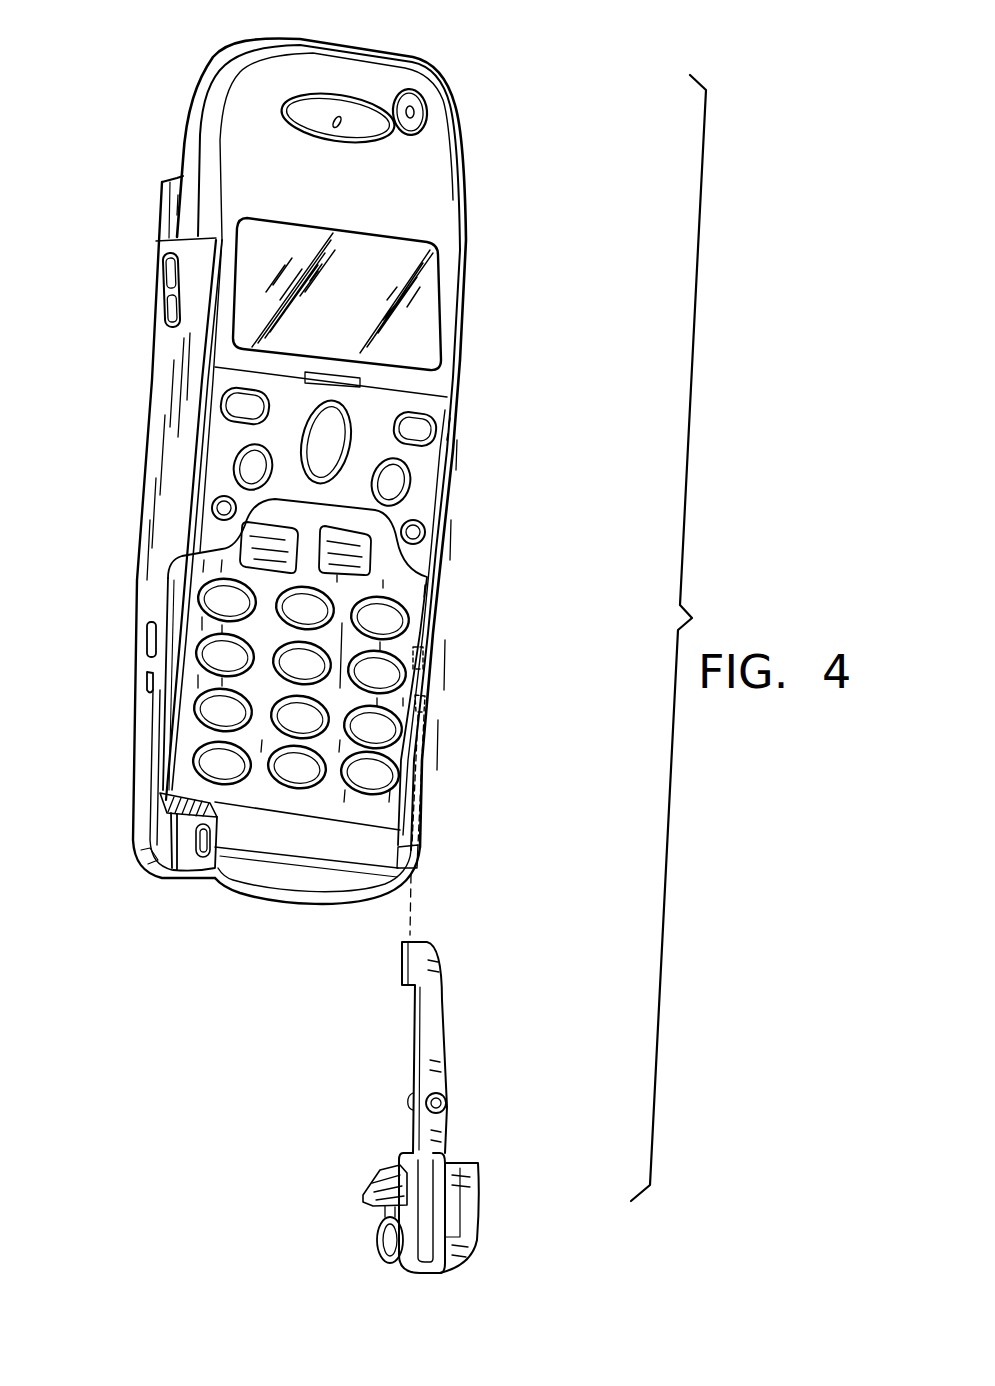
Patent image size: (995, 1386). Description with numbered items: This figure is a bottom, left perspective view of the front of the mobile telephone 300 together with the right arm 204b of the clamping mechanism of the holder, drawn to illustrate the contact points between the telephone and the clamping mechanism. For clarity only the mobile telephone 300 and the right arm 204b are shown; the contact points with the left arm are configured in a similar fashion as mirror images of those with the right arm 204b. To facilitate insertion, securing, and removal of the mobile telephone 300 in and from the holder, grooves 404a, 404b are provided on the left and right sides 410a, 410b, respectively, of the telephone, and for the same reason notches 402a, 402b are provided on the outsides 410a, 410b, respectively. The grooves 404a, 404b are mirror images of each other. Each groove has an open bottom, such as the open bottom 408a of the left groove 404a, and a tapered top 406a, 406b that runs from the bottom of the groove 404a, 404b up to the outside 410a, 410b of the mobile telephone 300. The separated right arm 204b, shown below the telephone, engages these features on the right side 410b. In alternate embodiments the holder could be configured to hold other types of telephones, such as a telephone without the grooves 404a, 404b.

The mobile telephone 300 is at (468, 201).
The left side 410a is at (170, 350).
The right side 410b is at (458, 424).
The notch 402a is at (147, 640).
The notch 402b is at (420, 660).
The tapered top 406a is at (147, 690).
The tapered top 406b is at (426, 722).
The groove 404a is at (143, 765).
The groove 404b is at (424, 792).
The open bottom 408a is at (150, 856).
The right arm 204b is at (444, 1030).